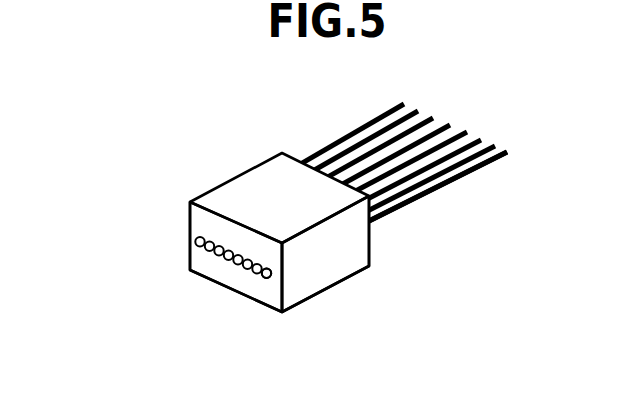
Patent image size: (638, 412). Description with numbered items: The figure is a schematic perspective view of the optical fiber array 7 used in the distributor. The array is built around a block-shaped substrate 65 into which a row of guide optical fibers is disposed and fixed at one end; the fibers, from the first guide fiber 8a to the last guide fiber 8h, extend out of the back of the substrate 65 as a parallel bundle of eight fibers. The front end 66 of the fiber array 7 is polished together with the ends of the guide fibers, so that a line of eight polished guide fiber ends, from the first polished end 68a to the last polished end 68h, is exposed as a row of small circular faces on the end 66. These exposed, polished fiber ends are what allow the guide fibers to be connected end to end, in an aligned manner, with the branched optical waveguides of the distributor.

The optical fiber array 7 is at (212, 189).
The guide optical fiber 8h is at (353, 132).
The guide optical fiber 8a is at (425, 193).
The substrate 65 is at (337, 284).
The end of the fiber array 66 is at (225, 273).
The polished guide fiber end 68h is at (195, 243).
The polished guide fiber end 68a is at (267, 280).